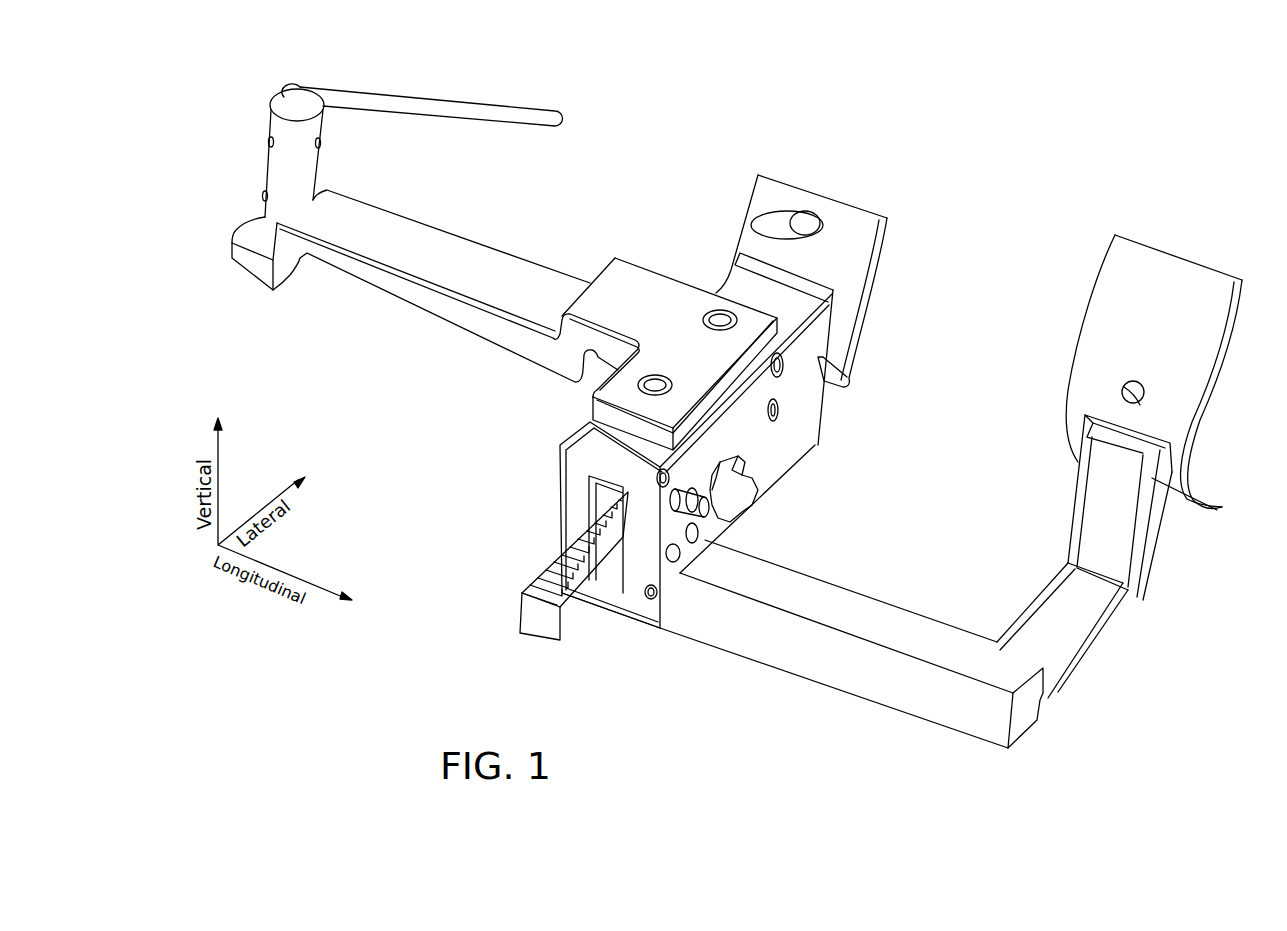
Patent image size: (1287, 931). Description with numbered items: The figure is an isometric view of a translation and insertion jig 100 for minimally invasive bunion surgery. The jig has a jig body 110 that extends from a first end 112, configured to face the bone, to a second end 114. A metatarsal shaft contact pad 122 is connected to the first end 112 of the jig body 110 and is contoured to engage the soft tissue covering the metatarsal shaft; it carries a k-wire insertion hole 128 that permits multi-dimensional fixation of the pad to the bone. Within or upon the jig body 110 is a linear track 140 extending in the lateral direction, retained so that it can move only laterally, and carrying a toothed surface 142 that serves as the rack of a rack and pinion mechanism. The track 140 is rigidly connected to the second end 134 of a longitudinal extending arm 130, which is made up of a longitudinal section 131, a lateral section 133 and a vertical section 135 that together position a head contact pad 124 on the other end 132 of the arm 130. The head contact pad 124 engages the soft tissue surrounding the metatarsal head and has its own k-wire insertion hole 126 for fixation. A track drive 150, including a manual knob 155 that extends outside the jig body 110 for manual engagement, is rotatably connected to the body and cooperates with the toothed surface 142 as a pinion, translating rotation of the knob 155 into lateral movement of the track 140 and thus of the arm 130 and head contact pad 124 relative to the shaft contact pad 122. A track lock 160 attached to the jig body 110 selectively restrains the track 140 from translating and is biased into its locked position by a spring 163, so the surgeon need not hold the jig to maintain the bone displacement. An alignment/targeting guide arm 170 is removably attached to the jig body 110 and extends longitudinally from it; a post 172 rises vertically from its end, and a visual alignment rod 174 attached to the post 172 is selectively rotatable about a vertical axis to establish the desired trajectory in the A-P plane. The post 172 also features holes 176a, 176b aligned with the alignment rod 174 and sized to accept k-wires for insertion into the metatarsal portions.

The translation and insertion jig 100 is at (735, 438).
The jig body 110 is at (679, 474).
The first end 112 is at (852, 331).
The second end 114 is at (547, 463).
The metatarsal shaft contact pad 122 is at (798, 266).
The head contact pad 124 is at (1237, 300).
The k-wire insertion hole 126 is at (1140, 394).
The k-wire insertion hole 128 is at (767, 222).
The extending arm 130 is at (970, 524).
The longitudinal section 131 is at (850, 697).
The other end 132 is at (1117, 372).
The lateral section 133 is at (1100, 640).
The second end 134 is at (605, 640).
The vertical section 135 is at (1153, 537).
The linear track 140 is at (546, 583).
The toothed surface 142 is at (550, 565).
The track drive 150 is at (753, 518).
The manual knob 155 is at (743, 490).
The track lock 160 is at (692, 462).
The spring 163 is at (668, 553).
The alignment/targeting guide arm 170 is at (414, 229).
The post 172 is at (288, 153).
The visual alignment rod 174 is at (425, 95).
The hole 176a is at (268, 140).
The hole 176b is at (263, 196).